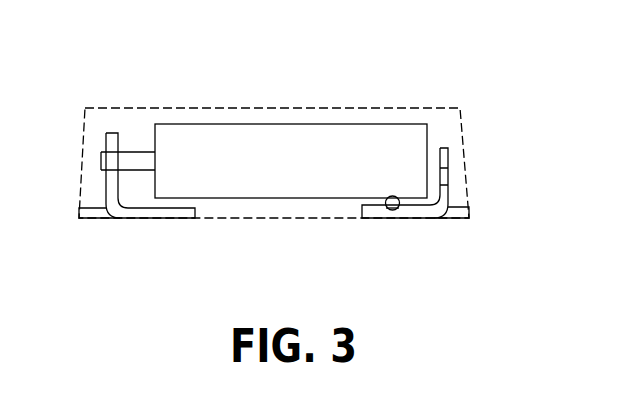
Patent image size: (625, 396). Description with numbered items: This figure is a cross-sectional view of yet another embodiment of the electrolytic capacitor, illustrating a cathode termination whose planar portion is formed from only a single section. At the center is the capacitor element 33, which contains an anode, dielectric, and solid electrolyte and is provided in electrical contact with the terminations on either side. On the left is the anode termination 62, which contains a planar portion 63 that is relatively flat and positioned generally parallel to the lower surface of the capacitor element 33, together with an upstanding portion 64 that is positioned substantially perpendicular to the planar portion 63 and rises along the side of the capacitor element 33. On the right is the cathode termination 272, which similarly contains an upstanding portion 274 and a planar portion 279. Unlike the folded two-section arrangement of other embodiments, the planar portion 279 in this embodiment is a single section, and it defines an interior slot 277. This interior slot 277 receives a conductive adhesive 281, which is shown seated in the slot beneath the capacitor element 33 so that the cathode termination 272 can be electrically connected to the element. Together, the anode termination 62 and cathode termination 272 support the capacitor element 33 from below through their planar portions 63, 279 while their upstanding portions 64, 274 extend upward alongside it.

The capacitor element 33 is at (311, 152).
The anode termination 62 is at (108, 221).
The planar portion 63 is at (150, 212).
The upstanding portion 64 is at (112, 189).
The cathode termination 272 is at (450, 224).
The upstanding portion 274 is at (443, 156).
The interior slot 277 is at (386, 199).
The planar portion 279 is at (403, 215).
The conductive adhesive 281 is at (386, 211).